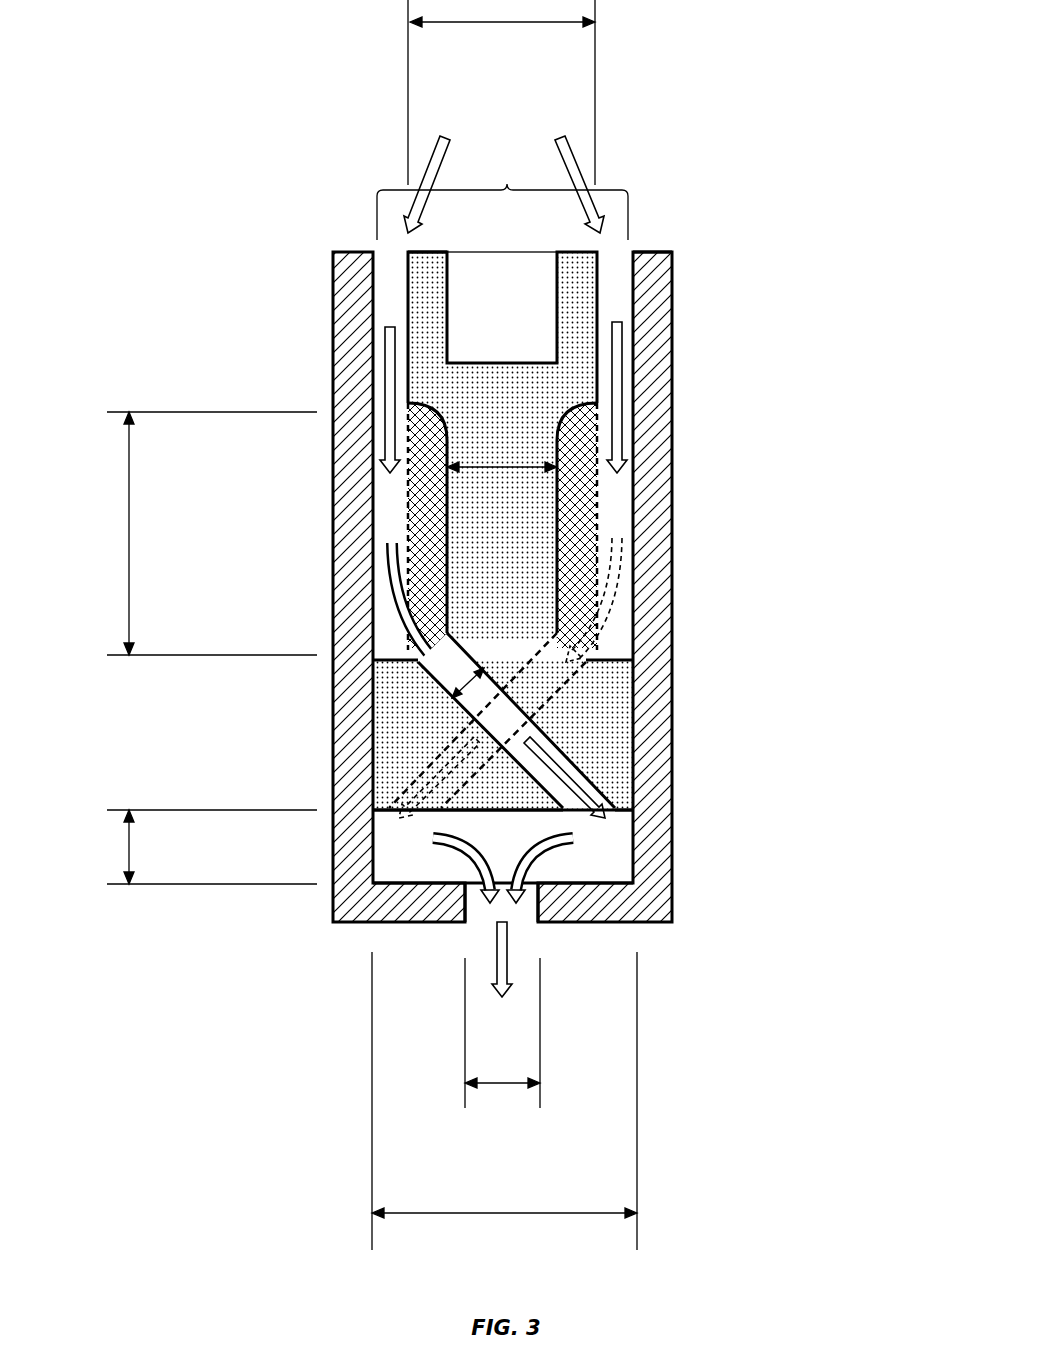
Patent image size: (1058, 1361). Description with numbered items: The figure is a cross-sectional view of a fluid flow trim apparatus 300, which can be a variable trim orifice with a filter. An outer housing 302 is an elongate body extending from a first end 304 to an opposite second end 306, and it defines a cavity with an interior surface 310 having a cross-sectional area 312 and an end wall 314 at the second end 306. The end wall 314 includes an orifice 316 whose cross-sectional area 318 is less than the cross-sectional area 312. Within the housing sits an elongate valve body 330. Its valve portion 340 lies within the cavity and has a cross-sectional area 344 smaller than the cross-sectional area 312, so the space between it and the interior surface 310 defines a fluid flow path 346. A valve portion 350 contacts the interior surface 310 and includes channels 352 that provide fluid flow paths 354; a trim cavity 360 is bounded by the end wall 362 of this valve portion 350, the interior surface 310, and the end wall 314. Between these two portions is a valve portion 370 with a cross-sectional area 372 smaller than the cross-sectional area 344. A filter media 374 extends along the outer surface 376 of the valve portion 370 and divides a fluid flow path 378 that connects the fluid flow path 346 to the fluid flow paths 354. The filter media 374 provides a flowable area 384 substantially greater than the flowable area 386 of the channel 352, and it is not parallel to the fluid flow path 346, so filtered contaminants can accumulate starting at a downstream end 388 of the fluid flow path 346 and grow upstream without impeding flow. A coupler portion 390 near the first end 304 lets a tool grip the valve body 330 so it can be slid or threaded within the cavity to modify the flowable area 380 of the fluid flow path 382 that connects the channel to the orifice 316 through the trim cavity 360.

The fluid flow trim apparatus 300 is at (97, 83).
The outer housing 302 is at (333, 285).
The first end 304 is at (650, 255).
The second end 306 is at (655, 923).
The interior surface 310 is at (632, 253).
The cross-sectional area 312 is at (462, 1244).
The end wall 314 is at (388, 880).
The orifice 316 is at (482, 925).
The cross-sectional area 318 is at (500, 1085).
The valve body 330 is at (397, 252).
The valve portion 340 is at (687, 255).
The cross-sectional area 344 is at (487, 23).
The fluid flow path 346 is at (385, 412).
The valve portion 350 is at (687, 672).
The channels 352 is at (410, 788).
The fluid flow paths 354 is at (440, 763).
The trim cavity 360 is at (687, 812).
The end wall 362 is at (536, 816).
The valve portion 370 is at (687, 405).
The cross-sectional area 372 is at (507, 469).
The filter media 374 is at (408, 523).
The outer surface 376 is at (443, 495).
The fluid flow path 378 is at (410, 617).
The flowable area 380 is at (129, 850).
The fluid flow path 382 is at (525, 816).
The flowable area 384 is at (129, 455).
The flowable area 386 is at (460, 690).
The downstream end 388 is at (383, 650).
The coupler portion 390 is at (478, 277).